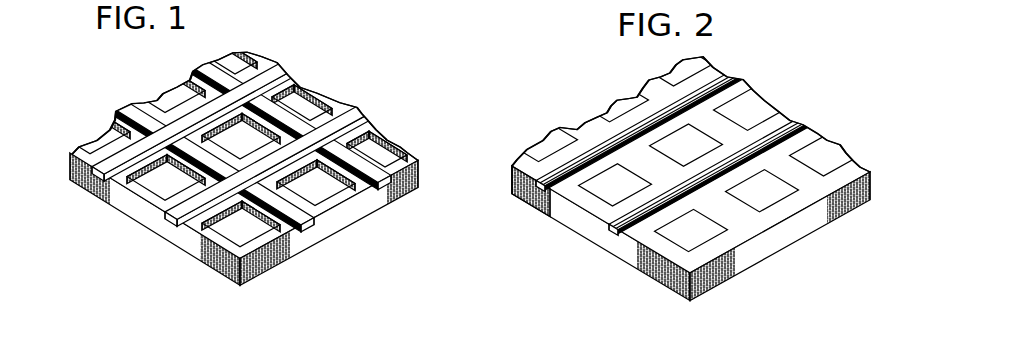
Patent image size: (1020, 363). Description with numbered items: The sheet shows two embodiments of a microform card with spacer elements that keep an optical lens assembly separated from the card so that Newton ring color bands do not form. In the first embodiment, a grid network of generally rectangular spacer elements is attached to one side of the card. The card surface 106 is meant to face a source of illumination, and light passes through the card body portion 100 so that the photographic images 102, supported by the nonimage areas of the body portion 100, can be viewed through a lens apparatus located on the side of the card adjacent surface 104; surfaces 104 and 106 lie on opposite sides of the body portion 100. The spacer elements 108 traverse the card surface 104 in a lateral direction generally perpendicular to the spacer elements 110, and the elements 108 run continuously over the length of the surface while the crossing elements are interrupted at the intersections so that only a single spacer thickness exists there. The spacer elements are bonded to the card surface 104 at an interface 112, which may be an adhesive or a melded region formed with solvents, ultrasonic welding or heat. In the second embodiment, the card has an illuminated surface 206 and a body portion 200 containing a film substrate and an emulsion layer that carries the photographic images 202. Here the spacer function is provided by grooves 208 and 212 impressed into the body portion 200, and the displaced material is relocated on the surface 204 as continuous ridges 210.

In FIG. 1, the card body portion 100 is at (160, 220).
In FIG. 1, the photographic images 102 is at (302, 95).
In FIG. 1, the card surface 104 is at (147, 197).
In FIG. 1, the card surface 106 is at (207, 265).
In FIG. 1, the spacer elements 108 is at (347, 117).
In FIG. 1, the spacer elements 110 is at (210, 68).
In FIG. 1, the interface 112 is at (307, 225).
In FIG. 2, the body portion 200 is at (587, 225).
In FIG. 2, the photographic images 202 is at (753, 108).
In FIG. 2, the surface 204 is at (633, 123).
In FIG. 2, the illuminated surface 206 is at (670, 287).
In FIG. 2, the grooves 208 is at (527, 198).
In FIG. 2, the continuous ridges 210 is at (670, 82).
In FIG. 2, the grooves 212 is at (613, 232).